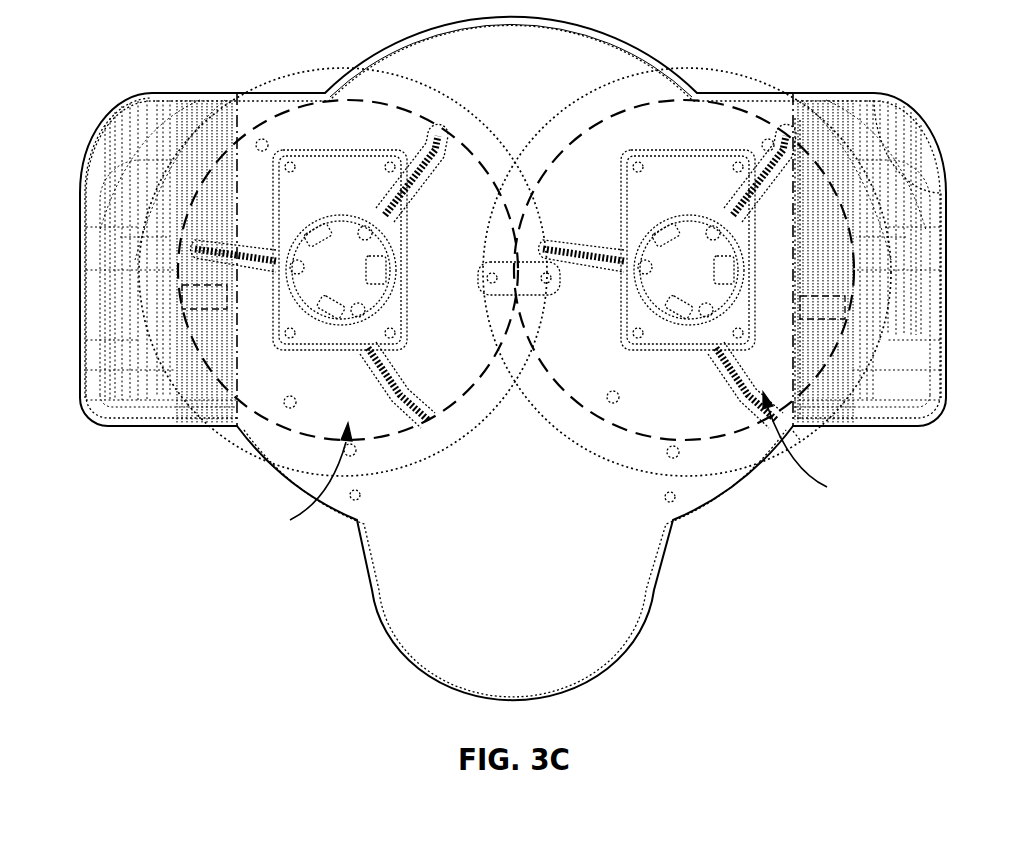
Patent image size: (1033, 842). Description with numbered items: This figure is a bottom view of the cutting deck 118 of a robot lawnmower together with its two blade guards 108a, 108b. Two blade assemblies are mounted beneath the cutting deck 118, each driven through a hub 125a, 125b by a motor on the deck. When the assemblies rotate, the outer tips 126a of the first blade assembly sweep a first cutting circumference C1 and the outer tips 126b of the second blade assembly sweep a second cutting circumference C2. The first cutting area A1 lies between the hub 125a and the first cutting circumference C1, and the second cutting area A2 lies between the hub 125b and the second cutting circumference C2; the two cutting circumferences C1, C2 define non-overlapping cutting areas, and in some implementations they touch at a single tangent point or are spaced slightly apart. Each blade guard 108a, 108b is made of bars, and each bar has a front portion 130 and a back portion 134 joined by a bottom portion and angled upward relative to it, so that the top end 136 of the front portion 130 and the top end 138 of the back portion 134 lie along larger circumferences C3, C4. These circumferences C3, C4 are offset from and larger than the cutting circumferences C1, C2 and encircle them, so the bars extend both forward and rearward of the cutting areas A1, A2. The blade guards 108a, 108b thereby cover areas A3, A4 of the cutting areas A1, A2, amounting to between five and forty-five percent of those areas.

The cutting deck 118 is at (540, 90).
The blade guard 108b is at (246, 91).
The blade guard 108a is at (835, 112).
The hub 125b is at (366, 282).
The hub 125a is at (714, 282).
The outer tips 126b is at (432, 128).
The outer tips 126a is at (776, 127).
The back portion 134 is at (790, 110).
The top end of the back portion 138 is at (797, 118).
The front portion 130 is at (797, 424).
The top end of the front portion 136 is at (797, 440).
The first cutting area A1 is at (807, 447).
The second cutting area A2 is at (307, 478).
The covered area A3 is at (822, 308).
The covered area A4 is at (204, 297).
The first cutting circumference C1 is at (571, 390).
The second cutting circumference C2 is at (455, 397).
The circumference C3 is at (603, 458).
The circumference C4 is at (418, 460).